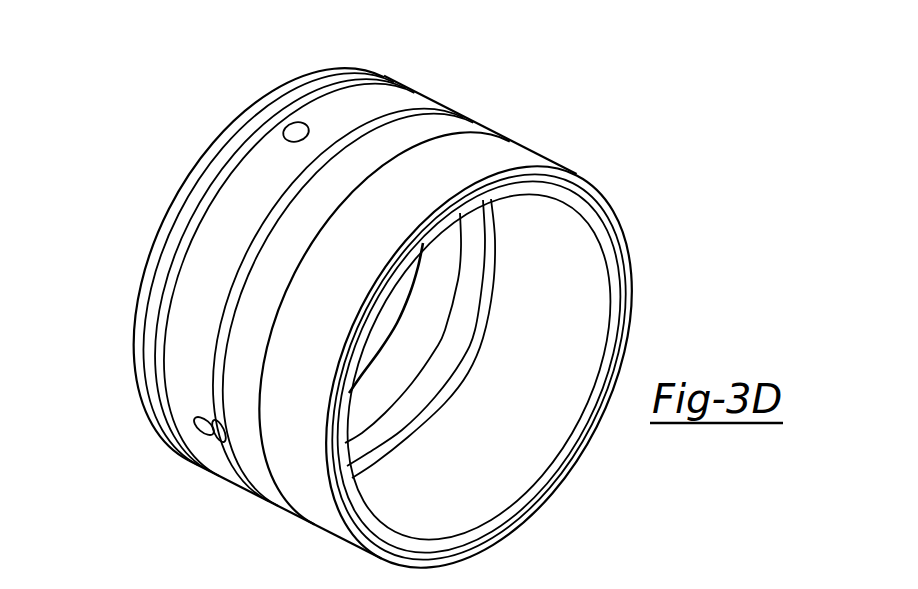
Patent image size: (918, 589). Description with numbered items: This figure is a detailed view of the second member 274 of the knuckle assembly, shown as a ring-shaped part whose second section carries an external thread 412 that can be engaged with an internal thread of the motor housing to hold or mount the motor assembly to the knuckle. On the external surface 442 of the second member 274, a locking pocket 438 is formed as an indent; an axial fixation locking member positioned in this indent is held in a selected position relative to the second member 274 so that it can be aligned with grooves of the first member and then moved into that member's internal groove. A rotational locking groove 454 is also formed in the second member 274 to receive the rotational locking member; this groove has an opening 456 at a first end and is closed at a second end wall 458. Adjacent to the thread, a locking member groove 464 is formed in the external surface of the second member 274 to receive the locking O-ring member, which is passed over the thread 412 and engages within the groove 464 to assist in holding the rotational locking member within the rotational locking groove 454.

The second member 274 is at (371, 301).
The external thread 412 is at (520, 160).
The locking pocket 438 is at (290, 132).
The external surface 442 is at (337, 108).
The rotational locking groove 454 is at (145, 431).
The opening 456 is at (205, 408).
The second end wall 458 is at (200, 427).
The locking member groove 464 is at (407, 135).